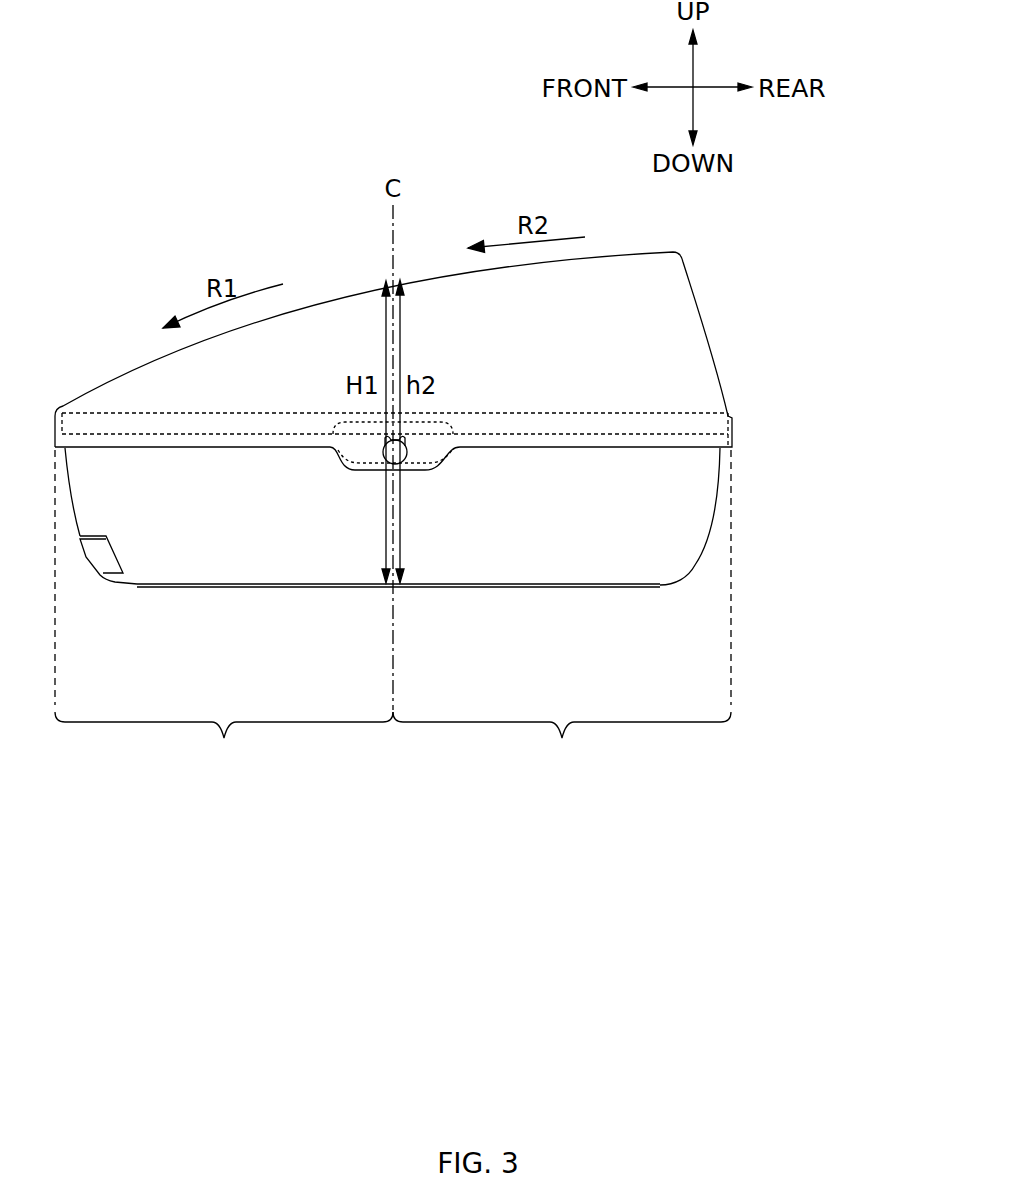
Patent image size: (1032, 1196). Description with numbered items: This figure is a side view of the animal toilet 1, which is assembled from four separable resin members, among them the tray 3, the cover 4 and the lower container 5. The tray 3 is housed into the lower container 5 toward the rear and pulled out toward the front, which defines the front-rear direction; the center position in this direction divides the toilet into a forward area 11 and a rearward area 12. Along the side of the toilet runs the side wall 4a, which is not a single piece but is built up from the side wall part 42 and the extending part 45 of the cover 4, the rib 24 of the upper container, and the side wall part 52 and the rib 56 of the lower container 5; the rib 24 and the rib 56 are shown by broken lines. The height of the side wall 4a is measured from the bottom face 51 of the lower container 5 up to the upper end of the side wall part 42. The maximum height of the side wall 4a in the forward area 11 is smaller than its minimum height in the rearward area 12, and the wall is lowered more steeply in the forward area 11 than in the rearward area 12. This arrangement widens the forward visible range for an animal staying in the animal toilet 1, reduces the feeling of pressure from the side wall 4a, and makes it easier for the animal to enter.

The animal toilet 1 is at (150, 182).
The tray 3 is at (100, 557).
The cover 4 is at (730, 277).
The side wall 4a is at (843, 350).
The side wall part 42 is at (683, 365).
The rib 24 is at (733, 418).
The extending part 45 is at (732, 430).
The rib 56 is at (737, 443).
The side wall part 52 is at (695, 499).
The lower container 5 is at (714, 581).
The bottom face 51 is at (498, 590).
The forward area 11 is at (224, 611).
The rearward area 12 is at (562, 611).